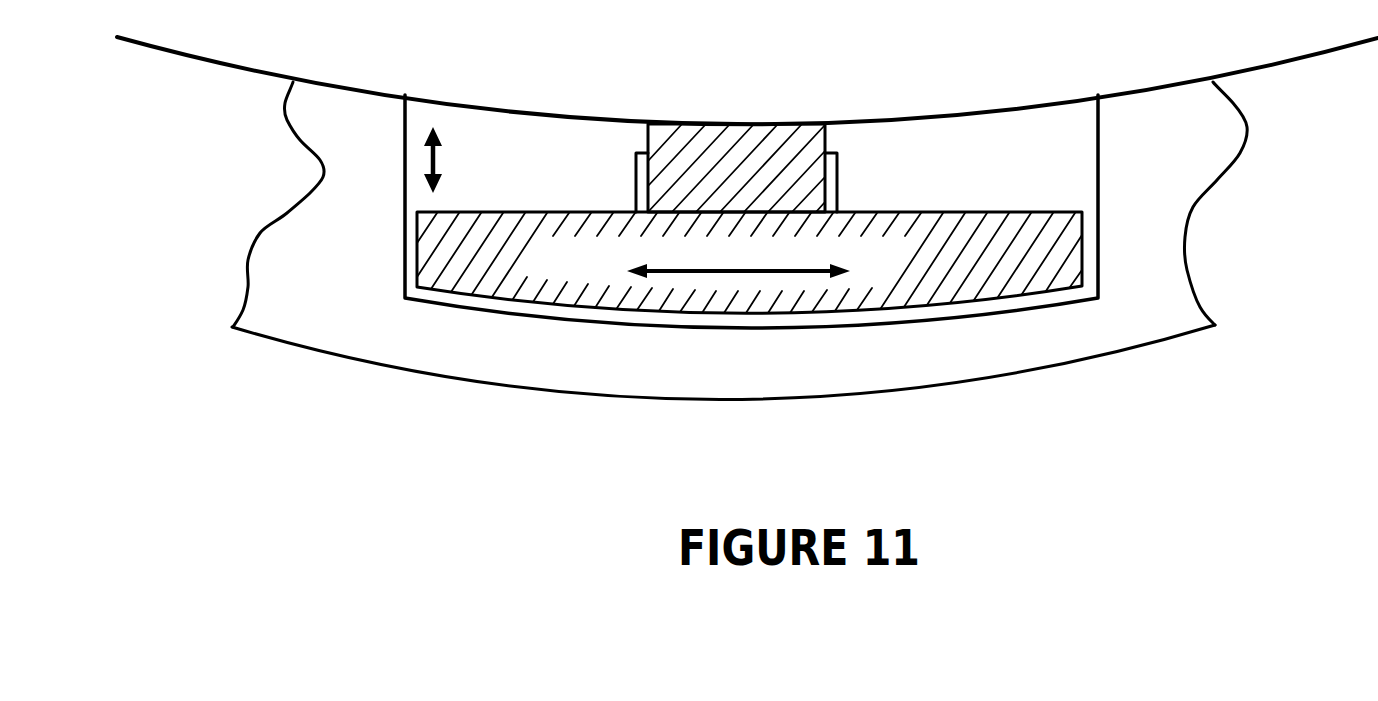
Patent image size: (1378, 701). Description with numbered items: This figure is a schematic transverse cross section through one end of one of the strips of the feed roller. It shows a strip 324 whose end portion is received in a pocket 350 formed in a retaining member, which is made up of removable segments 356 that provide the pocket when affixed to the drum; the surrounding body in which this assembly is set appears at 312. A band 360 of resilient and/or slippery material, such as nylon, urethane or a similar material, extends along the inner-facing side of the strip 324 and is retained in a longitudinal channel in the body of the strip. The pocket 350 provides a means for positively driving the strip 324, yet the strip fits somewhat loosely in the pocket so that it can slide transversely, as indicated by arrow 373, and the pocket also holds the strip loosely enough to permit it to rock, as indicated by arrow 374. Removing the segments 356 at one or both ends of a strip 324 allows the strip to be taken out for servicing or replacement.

The body / housing wall 312 is at (197, 67).
The pocket 350 is at (953, 152).
The removable segment 356 is at (752, 385).
The strip 324 is at (927, 290).
The band 360 is at (722, 152).
The arrow 373 is at (720, 268).
The arrow 374 is at (437, 163).